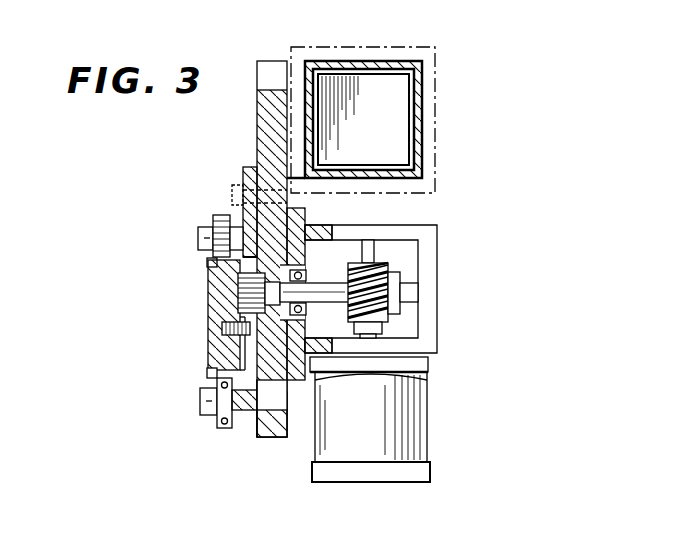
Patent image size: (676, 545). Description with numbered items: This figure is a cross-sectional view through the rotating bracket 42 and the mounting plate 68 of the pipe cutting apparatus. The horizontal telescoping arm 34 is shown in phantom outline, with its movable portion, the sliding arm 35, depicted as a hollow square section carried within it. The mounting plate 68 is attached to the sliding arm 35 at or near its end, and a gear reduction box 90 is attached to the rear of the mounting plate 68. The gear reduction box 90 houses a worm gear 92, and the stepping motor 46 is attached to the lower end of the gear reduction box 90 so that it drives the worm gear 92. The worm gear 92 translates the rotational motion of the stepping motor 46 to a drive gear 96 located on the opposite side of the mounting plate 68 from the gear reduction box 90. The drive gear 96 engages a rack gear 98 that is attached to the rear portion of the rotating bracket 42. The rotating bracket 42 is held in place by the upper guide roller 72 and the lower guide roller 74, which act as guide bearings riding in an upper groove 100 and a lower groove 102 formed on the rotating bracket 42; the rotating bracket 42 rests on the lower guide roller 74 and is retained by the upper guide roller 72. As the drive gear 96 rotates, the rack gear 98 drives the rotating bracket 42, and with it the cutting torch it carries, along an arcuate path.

The horizontal telescoping arm 34 is at (436, 129).
The sliding arm 35 is at (420, 73).
The rotating bracket 42 is at (206, 312).
The stepping motor 46 is at (428, 430).
The mounting plate 68 is at (277, 434).
The upper guide roller 72 is at (212, 222).
The lower guide roller 74 is at (218, 421).
The gear reduction box 90 is at (437, 318).
The worm gear 92 is at (406, 262).
The drive gear 96 is at (236, 296).
The rack gear 98 is at (232, 330).
The upper groove 100 is at (207, 262).
The lower groove 102 is at (210, 372).